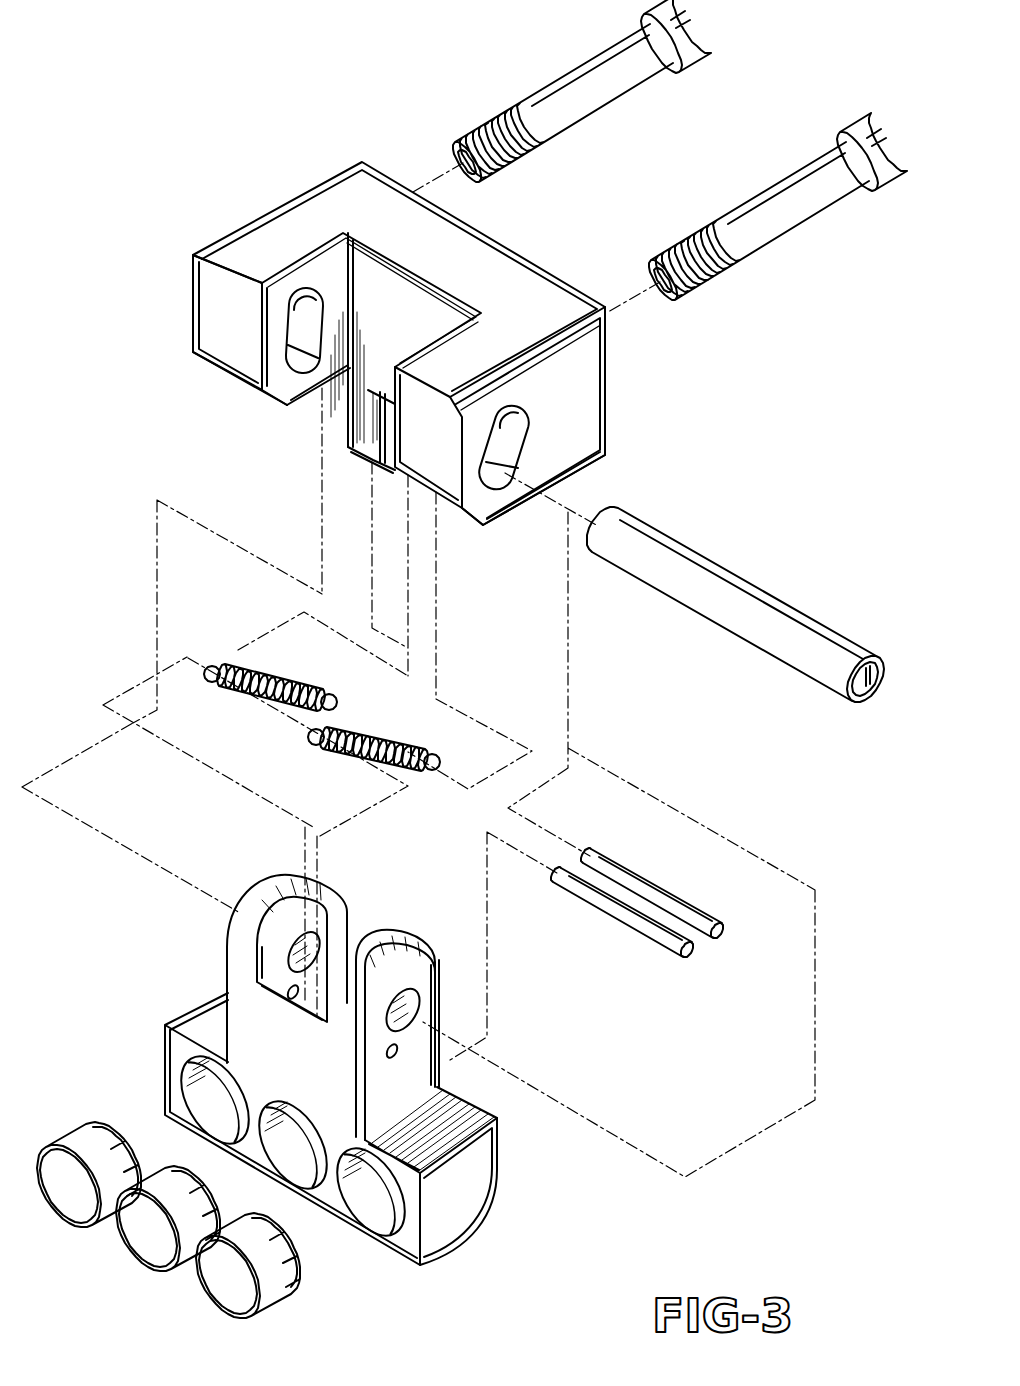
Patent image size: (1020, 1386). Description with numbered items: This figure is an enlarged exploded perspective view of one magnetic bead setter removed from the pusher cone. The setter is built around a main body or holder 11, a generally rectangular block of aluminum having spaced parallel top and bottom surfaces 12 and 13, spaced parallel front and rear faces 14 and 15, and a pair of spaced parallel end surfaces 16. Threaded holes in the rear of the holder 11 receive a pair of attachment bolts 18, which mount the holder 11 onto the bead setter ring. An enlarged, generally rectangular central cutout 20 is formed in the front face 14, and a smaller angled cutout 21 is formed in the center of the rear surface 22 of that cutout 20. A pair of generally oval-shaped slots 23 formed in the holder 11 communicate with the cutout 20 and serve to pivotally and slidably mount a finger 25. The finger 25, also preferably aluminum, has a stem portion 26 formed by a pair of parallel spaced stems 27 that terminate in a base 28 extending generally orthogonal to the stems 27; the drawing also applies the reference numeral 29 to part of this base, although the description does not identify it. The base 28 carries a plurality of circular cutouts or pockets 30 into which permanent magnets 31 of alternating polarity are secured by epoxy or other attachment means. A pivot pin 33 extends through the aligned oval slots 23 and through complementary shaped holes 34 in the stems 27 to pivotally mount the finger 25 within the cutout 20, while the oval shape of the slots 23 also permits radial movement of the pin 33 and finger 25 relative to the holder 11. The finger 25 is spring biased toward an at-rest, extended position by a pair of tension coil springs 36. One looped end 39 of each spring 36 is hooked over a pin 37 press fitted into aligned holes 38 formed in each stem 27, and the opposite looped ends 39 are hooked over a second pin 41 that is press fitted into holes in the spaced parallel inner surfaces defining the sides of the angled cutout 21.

The main body or holder 11 is at (417, 321).
The top surface 12 is at (377, 200).
The bottom surface 13 is at (305, 397).
The front face 14 is at (213, 316).
The rear face 15 is at (463, 218).
The end surfaces 16 is at (580, 387).
The attachment bolts 18 is at (572, 128).
The central cutout 20 is at (445, 305).
The angled cutout 21 is at (388, 462).
The rear surface 22 is at (362, 275).
The oval-shaped slots 23 is at (300, 312).
The finger 25 is at (365, 1076).
The stem portion 26 is at (260, 996).
The stems 27 is at (280, 963).
The base 28 is at (407, 1247).
The side face of lower bracket 29 is at (433, 1260).
The circular cutouts or pockets 30 is at (383, 1213).
The permanent magnets 31 is at (275, 1307).
The pivot pin 33 is at (790, 605).
The holes 34 is at (403, 1010).
The tension coil springs 36 is at (296, 672).
The pin 37 is at (648, 939).
The aligned holes 38 is at (398, 1050).
The looped ends 39 is at (326, 694).
The second pin 41 is at (684, 903).